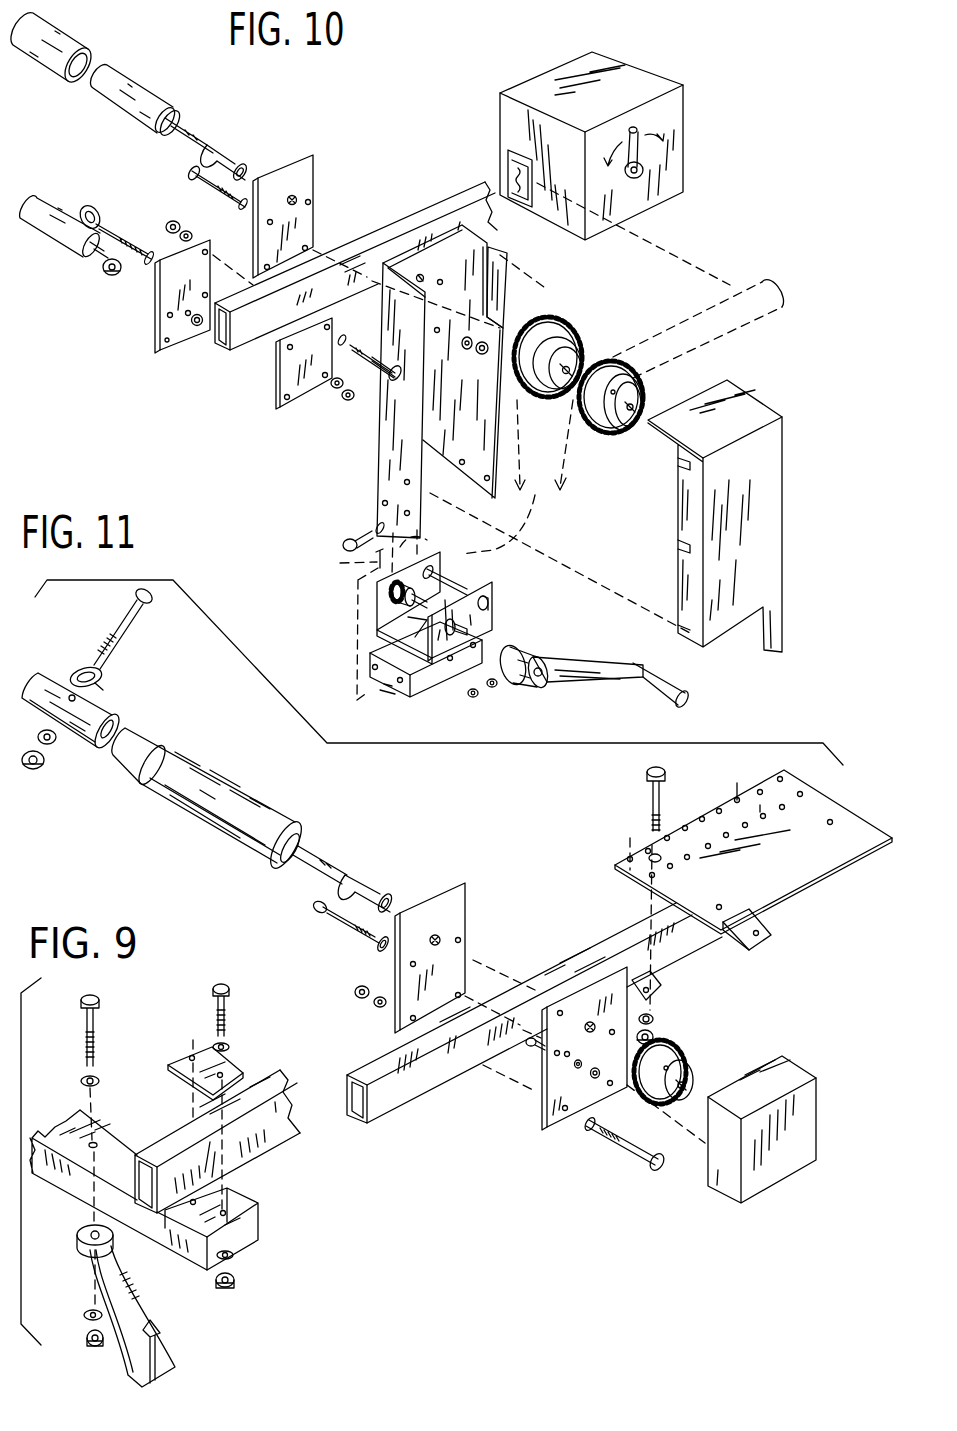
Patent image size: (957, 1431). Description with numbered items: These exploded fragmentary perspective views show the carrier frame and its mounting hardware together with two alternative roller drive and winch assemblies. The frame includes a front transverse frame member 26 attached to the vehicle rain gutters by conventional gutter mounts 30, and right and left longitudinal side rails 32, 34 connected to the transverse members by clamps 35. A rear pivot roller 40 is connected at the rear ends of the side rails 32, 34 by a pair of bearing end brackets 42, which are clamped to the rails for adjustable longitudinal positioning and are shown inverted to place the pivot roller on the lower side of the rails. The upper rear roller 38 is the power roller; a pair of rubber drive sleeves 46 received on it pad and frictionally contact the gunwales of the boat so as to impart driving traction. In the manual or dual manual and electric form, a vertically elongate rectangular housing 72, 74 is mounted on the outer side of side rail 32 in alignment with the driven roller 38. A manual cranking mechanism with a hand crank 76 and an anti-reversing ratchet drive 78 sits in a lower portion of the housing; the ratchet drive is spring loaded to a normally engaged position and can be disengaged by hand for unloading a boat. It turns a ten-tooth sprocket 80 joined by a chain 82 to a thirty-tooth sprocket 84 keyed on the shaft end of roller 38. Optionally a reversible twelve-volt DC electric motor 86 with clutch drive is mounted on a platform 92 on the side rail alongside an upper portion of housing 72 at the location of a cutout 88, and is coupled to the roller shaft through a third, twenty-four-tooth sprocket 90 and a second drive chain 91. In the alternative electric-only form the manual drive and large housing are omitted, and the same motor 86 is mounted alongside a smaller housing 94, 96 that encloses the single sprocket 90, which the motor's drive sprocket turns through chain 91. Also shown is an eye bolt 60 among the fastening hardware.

In FIG. 9, the front transverse frame member 26 is at (52, 1178).
In FIG. 9, the gutter mount 30 is at (86, 1283).
In FIG. 10, the right longitudinal side rail 32 is at (245, 348).
In FIG. 11, the right longitudinal side rail 32 is at (577, 957).
In FIG. 9, the left longitudinal side rail 34 is at (262, 1145).
In FIG. 9, the clamp 35 is at (187, 1060).
In FIG. 10, the upper rear roller 38 is at (118, 110).
In FIG. 11, the upper rear roller 38 is at (133, 729).
In FIG. 10, the rear pivot roller 40 is at (50, 240).
In FIG. 10, the bearing end bracket 42 is at (310, 173).
In FIG. 11, the bearing end bracket 42 is at (438, 910).
In FIG. 10, the rubber drive sleeve 46 is at (38, 65).
In FIG. 11, the rubber drive sleeve 46 is at (228, 784).
In FIG. 10, the eye bolt 60 is at (102, 213).
In FIG. 10, the housing 72 is at (377, 428).
In FIG. 10, the housing 74 is at (748, 405).
In FIG. 10, the hand crank 76 is at (585, 660).
In FIG. 10, the anti-reversing ratchet drive 78 is at (360, 620).
In FIG. 10, the 10-tooth sprocket 80 is at (378, 597).
In FIG. 10, the chain 82 is at (447, 488).
In FIG. 10, the 30-tooth sprocket 84 is at (576, 338).
In FIG. 10, the reversible electric motor 86 is at (505, 121).
In FIG. 10, the cutout 88 is at (505, 275).
In FIG. 10, the 24-tooth sprocket 90 is at (592, 430).
In FIG. 11, the 24-tooth sprocket 90 is at (674, 1043).
In FIG. 10, the second drive chain 91 is at (660, 330).
In FIG. 11, the platform 92 is at (763, 887).
In FIG. 11, the smaller housing 94 is at (545, 1110).
In FIG. 11, the smaller housing 96 is at (712, 1164).